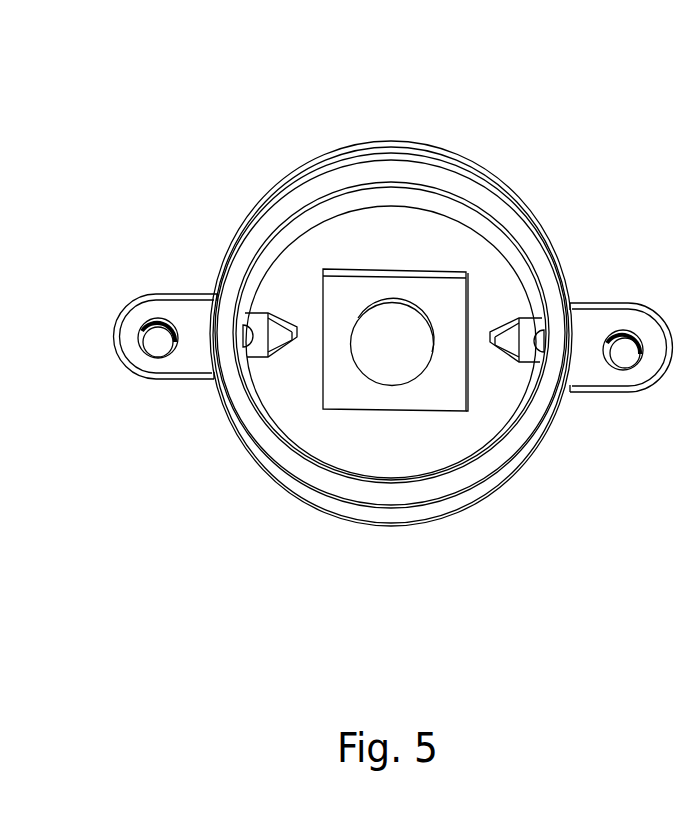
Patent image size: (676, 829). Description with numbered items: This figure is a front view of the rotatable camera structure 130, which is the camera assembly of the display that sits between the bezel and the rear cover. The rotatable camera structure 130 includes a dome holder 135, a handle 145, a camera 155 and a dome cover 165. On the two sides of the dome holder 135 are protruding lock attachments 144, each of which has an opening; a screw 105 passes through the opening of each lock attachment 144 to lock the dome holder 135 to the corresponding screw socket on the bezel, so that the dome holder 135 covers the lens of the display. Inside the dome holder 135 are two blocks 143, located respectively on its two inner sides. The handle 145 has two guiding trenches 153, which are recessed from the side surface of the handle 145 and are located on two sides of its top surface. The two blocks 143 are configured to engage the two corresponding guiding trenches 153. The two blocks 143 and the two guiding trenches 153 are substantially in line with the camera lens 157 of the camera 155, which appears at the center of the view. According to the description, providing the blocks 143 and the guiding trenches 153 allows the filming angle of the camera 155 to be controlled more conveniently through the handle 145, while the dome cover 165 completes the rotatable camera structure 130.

The rotatable camera structure 130 is at (146, 84).
The handle 145 is at (413, 228).
The dome cover 165 is at (527, 185).
The guiding trenches 153 is at (293, 316).
The dome holder 135 is at (253, 262).
The screw 105 is at (162, 342).
The lock attachments 144 is at (122, 340).
The blocks 143 is at (280, 328).
The camera lens 157 is at (382, 362).
The camera 155 is at (438, 393).